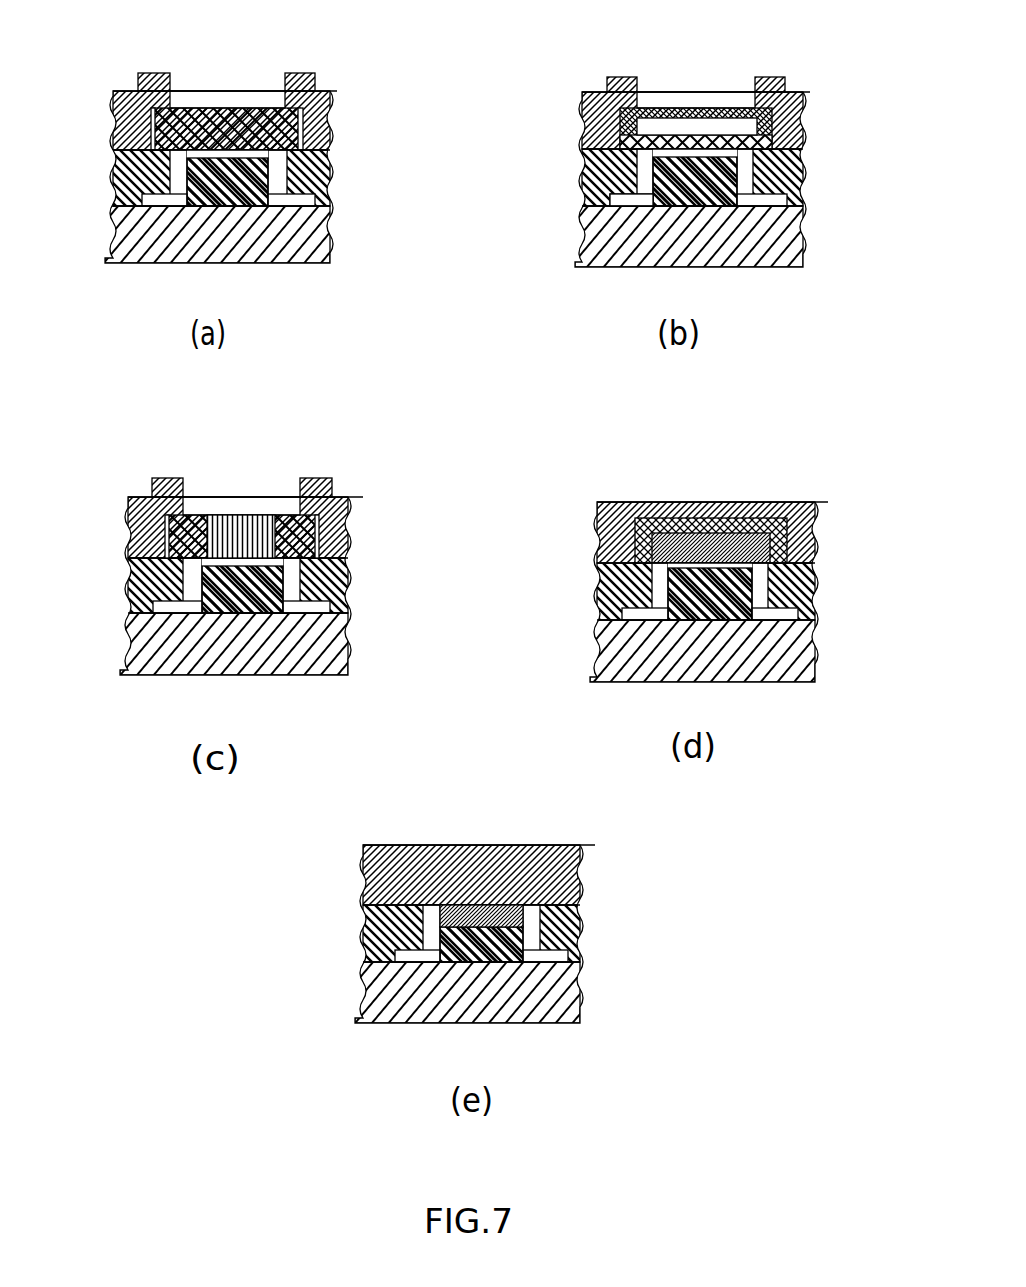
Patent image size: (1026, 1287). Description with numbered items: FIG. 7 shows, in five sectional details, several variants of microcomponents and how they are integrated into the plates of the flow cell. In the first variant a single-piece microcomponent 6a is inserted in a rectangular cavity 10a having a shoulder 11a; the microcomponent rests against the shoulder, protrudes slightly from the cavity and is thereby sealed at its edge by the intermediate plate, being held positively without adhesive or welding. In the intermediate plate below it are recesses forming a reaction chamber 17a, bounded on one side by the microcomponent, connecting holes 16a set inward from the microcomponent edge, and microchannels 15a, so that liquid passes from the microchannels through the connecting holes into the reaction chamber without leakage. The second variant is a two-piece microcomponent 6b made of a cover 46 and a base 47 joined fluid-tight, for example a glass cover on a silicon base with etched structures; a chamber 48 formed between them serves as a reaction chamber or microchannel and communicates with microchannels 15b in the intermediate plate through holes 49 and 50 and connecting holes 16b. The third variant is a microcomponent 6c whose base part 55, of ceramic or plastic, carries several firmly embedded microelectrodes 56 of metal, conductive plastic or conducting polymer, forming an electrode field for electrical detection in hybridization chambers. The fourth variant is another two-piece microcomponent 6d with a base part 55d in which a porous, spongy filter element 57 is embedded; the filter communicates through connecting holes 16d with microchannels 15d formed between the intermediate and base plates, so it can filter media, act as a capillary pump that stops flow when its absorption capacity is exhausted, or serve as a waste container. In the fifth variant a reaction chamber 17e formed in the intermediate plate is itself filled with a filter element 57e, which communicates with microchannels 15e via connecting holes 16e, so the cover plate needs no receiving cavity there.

The single-piece microcomponent 6a is at (118, 108).
The rectangular cavity 10a is at (317, 120).
The shoulder 11a is at (293, 75).
The microchannels 15a is at (127, 237).
The connecting holes 16a is at (120, 177).
The reaction chamber 17a is at (320, 167).
The two-piece microcomponent 6b is at (783, 119).
The cover 46 is at (683, 108).
The base 47 is at (613, 73).
The chamber 48 is at (707, 130).
The hole 49 is at (590, 170).
The hole 50 is at (790, 163).
The microchannels 15b is at (755, 188).
The connecting holes 16b is at (590, 193).
The microcomponent 6c is at (400, 527).
The base part 55 is at (195, 510).
The microelectrodes 56 is at (250, 507).
The two-piece microcomponent 6d is at (800, 550).
The base part 55d is at (647, 502).
The filter element 57 is at (753, 502).
The microchannels 15d is at (810, 640).
The connecting holes 16d is at (600, 583).
The filter element 57e is at (475, 913).
The microchannels 15e is at (590, 983).
The connecting holes 16e is at (430, 937).
The reaction chamber 17e is at (567, 930).